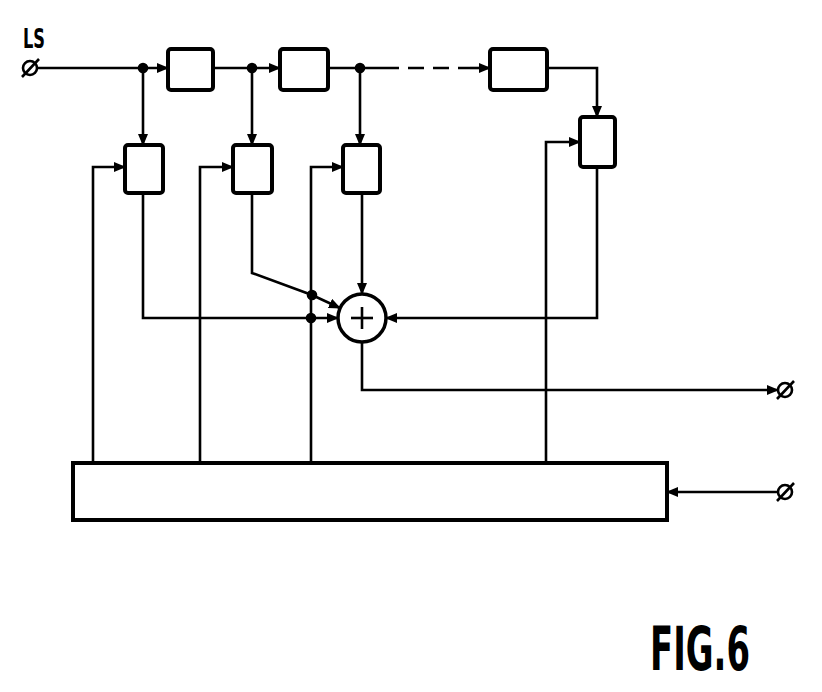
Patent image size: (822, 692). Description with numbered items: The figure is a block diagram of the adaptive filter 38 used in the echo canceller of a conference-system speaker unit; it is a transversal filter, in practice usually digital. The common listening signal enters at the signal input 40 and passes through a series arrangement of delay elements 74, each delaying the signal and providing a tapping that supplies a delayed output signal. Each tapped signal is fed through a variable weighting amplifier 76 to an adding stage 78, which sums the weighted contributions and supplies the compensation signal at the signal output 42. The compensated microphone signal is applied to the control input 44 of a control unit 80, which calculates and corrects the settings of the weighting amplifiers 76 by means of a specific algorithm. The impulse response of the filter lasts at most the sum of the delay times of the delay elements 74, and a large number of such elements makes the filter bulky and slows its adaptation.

The adaptive filter 38 is at (483, 232).
The signal input 40 is at (31, 76).
The signal output 42 is at (786, 383).
The control input 44 is at (786, 485).
The delay elements 74 is at (206, 46).
The variable weighting amplifiers 76 is at (163, 183).
The adding stage 78 is at (380, 297).
The control unit 80 is at (385, 463).